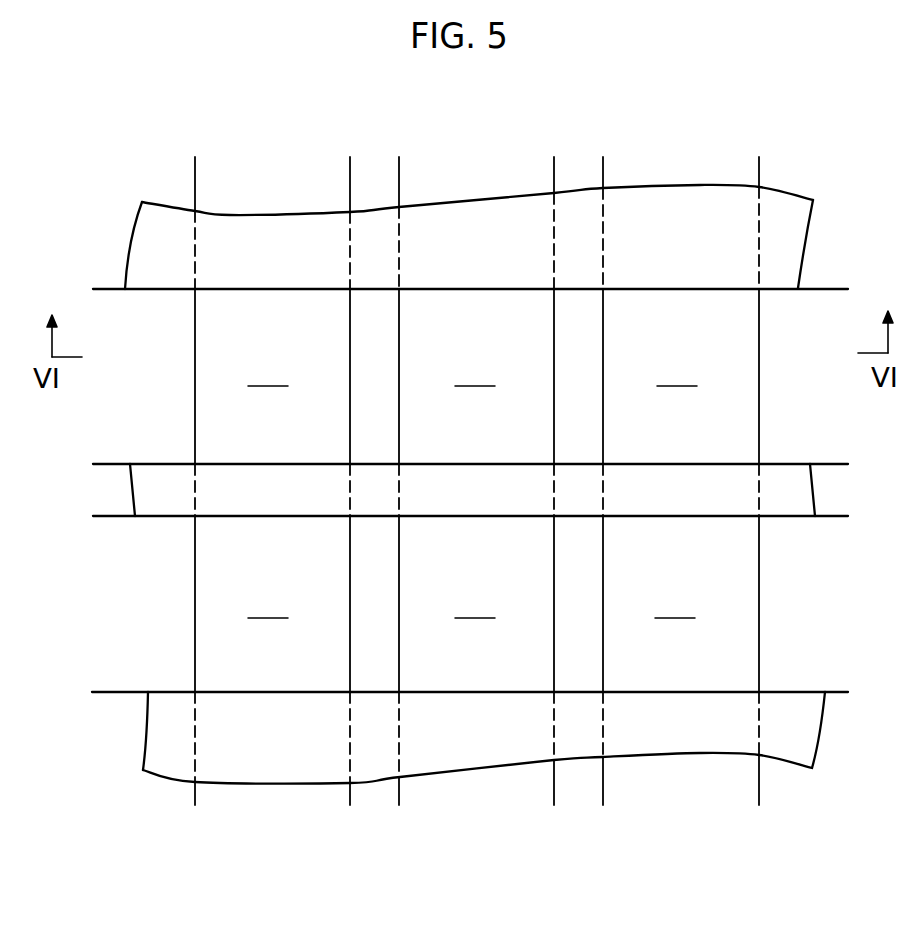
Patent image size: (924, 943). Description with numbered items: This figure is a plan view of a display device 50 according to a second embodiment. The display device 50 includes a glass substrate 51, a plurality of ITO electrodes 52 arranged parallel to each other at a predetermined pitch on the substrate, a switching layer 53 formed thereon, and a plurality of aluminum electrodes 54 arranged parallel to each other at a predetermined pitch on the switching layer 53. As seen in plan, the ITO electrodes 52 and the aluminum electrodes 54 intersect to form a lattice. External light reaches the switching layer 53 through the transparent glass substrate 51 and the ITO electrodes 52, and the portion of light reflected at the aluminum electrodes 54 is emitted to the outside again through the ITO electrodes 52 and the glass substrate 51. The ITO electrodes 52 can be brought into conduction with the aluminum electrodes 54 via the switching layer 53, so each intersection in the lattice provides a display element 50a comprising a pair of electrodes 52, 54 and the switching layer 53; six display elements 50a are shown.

The display device 50 is at (136, 188).
The display element 50a is at (472, 486).
The glass substrate 51 is at (583, 787).
The ITO electrodes 52 is at (647, 162).
The switching layer 53 is at (788, 253).
The aluminum electrodes 54 is at (813, 405).